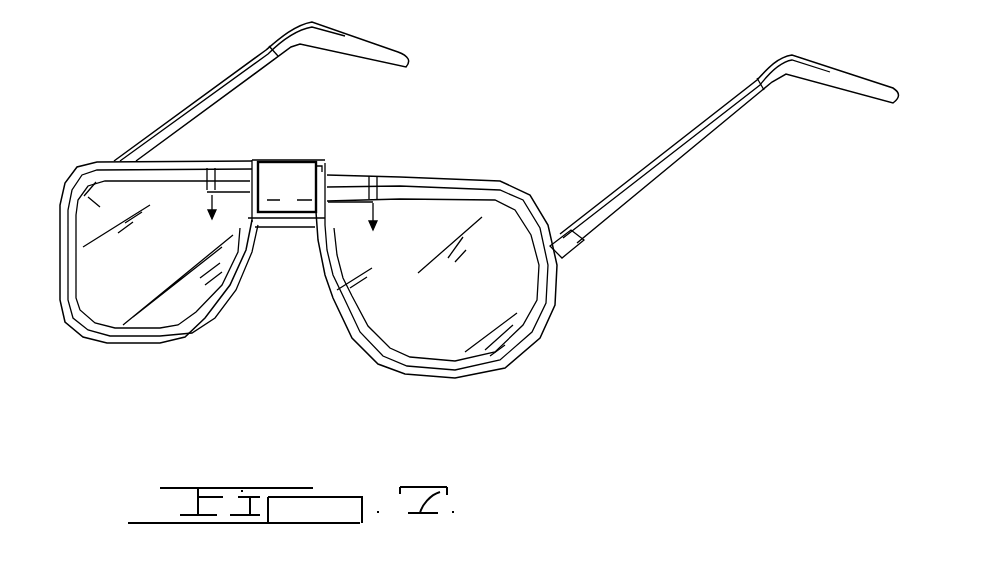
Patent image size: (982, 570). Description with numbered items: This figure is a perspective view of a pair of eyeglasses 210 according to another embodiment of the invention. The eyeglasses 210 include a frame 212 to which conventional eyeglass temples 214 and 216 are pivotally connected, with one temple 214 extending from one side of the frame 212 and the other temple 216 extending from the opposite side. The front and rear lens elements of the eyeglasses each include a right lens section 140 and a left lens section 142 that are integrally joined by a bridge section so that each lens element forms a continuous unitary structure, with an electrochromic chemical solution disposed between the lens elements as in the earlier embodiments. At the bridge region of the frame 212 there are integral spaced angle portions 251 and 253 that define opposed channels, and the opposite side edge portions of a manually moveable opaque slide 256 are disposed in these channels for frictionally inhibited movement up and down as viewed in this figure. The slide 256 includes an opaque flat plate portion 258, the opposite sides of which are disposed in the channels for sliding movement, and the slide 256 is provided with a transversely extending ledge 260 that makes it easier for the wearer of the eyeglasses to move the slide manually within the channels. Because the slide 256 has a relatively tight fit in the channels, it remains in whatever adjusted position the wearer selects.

The pair of eyeglasses 210 is at (322, 272).
The frame 212 is at (415, 377).
The eyeglass temple 214 is at (220, 78).
The eyeglass temple 216 is at (705, 133).
The right lens section 140 is at (118, 293).
The left lens section 142 is at (515, 318).
The angle portion 251 is at (255, 173).
The angle portion 253 is at (330, 174).
The opaque slide 256 is at (318, 164).
The opaque flat plate portion 258 is at (287, 203).
The ledge 260 is at (285, 160).